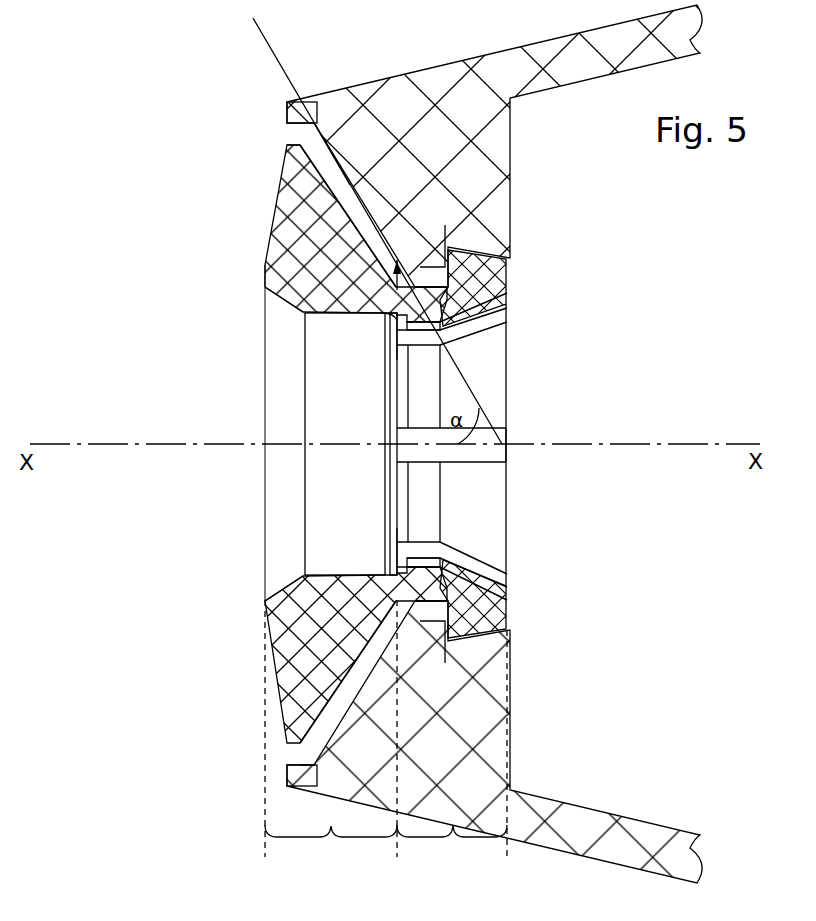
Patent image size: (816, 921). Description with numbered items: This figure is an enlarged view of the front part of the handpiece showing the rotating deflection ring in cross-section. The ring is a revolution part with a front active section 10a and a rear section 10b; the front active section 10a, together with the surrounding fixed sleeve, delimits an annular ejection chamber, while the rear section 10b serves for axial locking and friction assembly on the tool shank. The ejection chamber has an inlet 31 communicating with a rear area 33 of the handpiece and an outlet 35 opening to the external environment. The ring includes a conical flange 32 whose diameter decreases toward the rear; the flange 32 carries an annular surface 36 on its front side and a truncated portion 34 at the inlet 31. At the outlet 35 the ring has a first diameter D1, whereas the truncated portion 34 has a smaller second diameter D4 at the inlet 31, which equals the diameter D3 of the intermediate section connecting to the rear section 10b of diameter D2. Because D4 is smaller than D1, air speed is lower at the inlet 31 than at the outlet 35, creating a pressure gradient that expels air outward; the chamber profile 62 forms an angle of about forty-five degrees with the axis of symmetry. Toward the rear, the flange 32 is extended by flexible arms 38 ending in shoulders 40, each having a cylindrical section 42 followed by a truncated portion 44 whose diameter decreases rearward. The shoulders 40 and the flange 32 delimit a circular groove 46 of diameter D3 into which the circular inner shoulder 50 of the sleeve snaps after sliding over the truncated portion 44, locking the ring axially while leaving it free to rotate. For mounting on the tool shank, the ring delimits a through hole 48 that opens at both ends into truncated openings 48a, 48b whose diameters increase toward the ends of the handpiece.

The annular surface 36 is at (236, 672).
The flange 32 is at (280, 250).
The truncated portion 34 is at (338, 201).
The outlet 35 is at (316, 152).
The profile 62 is at (339, 156).
The cylindrical section 42 is at (400, 288).
The shoulder 40 is at (458, 256).
The truncated portion 44 is at (510, 280).
The flexible arms 38 is at (495, 283).
The rear area 33 is at (442, 282).
The inlet 31 is at (391, 274).
The through hole 48 is at (388, 433).
The truncated opening 48a is at (288, 313).
The truncated opening 48b is at (470, 580).
The circular groove 46 is at (391, 620).
The circular inner shoulder 50 is at (412, 636).
The first diameter D1 is at (292, 143).
The diameter of rear section D2 is at (455, 245).
The diameter of intermediate section D3 is at (417, 285).
The second diameter D4 is at (371, 445).
The front active section 10a is at (331, 739).
The rear section 10b is at (452, 754).